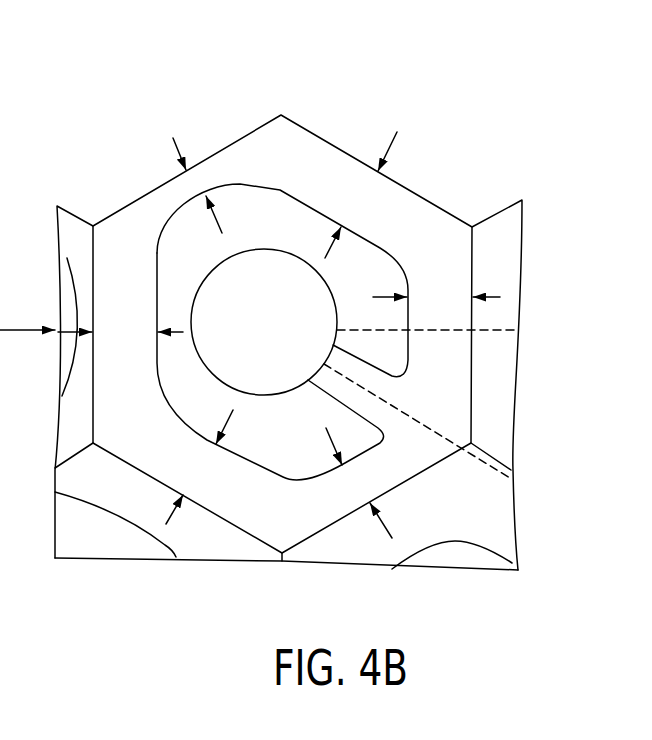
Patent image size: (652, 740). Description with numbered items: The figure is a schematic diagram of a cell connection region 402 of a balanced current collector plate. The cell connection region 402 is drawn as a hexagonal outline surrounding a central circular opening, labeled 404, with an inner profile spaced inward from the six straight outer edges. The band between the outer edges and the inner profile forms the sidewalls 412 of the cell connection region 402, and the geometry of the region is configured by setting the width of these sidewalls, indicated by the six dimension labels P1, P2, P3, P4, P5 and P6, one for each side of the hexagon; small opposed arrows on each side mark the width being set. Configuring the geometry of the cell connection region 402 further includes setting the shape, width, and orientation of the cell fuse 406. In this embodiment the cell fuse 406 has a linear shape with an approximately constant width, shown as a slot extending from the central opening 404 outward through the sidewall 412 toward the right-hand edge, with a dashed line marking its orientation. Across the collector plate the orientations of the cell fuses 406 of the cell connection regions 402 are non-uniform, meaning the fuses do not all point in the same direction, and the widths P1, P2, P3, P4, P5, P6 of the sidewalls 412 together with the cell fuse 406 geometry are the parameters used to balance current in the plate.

The cell connection region 402 is at (98, 157).
The central through hole 404 is at (280, 337).
The cell fuse 406 is at (403, 404).
The sidewalls 412 is at (437, 265).
The sidewall width P1 is at (355, 486).
The sidewall width P2 is at (436, 295).
The sidewall width P3 is at (354, 196).
The sidewall width P4 is at (200, 163).
The sidewall width P5 is at (121, 331).
The sidewall width P6 is at (197, 467).